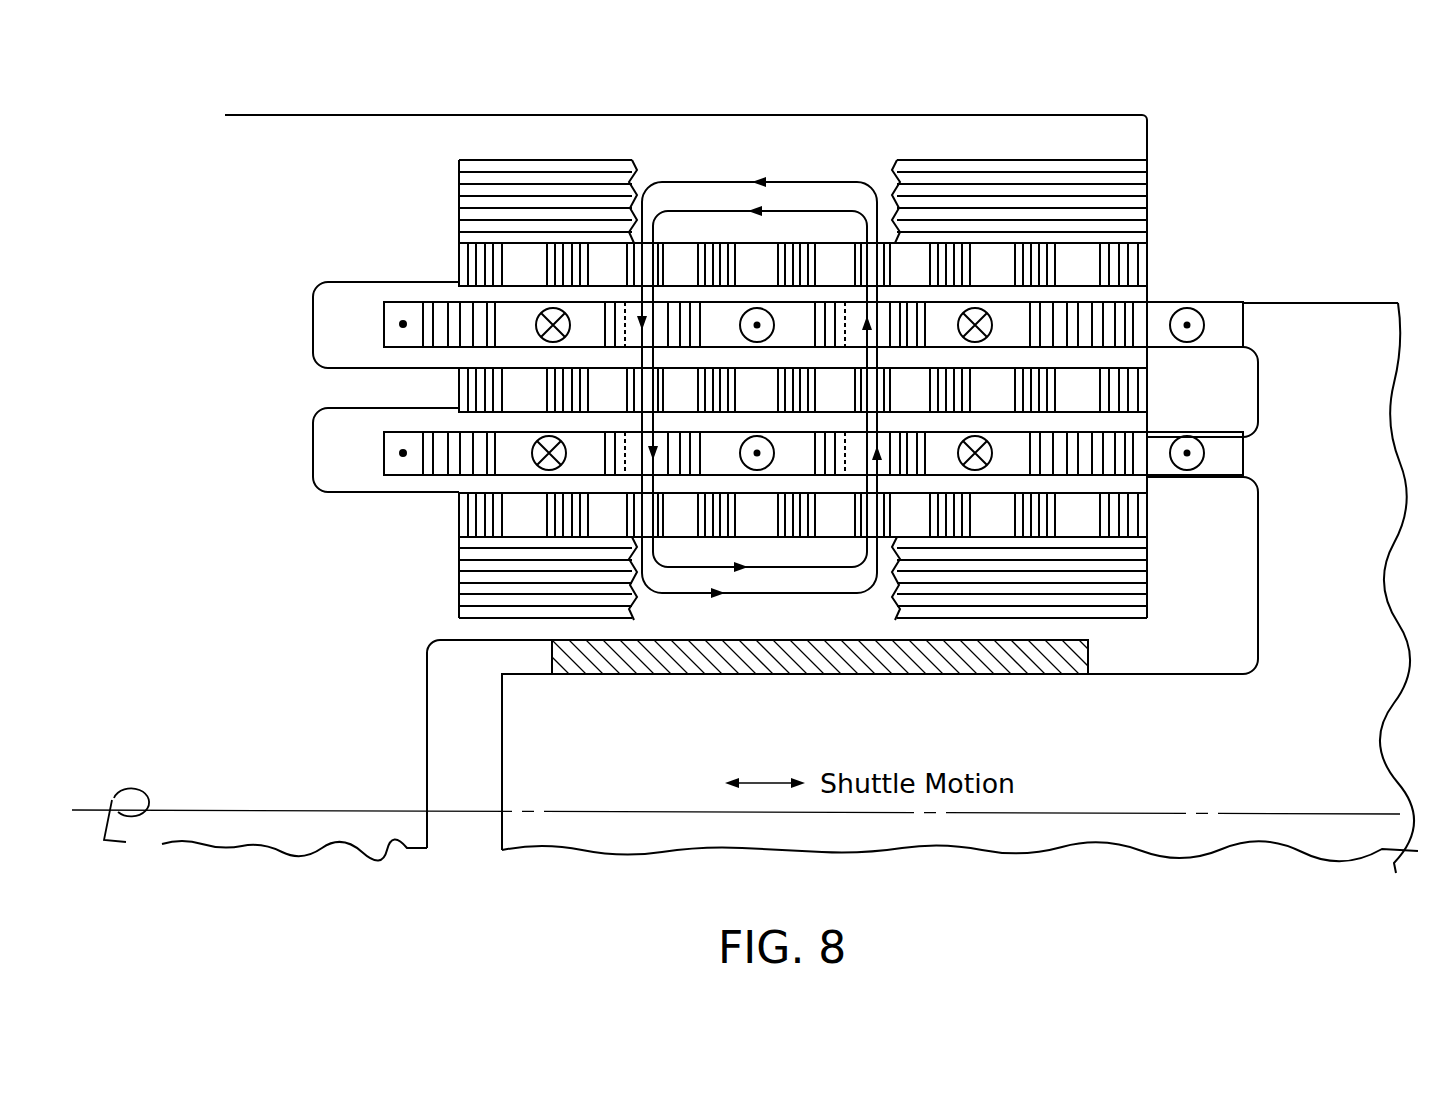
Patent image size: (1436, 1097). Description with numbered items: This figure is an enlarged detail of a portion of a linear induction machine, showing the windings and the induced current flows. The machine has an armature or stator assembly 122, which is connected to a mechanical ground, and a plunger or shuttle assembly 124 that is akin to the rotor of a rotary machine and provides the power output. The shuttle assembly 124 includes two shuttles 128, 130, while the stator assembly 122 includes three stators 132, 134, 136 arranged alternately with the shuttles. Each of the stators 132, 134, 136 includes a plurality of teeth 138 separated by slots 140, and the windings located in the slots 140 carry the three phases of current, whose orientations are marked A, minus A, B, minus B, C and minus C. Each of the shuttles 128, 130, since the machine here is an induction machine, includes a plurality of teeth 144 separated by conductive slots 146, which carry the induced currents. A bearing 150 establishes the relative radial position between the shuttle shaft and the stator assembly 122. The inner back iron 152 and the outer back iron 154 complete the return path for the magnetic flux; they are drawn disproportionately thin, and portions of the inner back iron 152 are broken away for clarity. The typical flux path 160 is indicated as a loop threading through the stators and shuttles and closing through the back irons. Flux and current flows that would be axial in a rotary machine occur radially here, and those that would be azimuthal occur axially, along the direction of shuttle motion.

The stator assembly 122 is at (297, 704).
The shuttle assembly 124 is at (1340, 711).
The shuttle 128 is at (1255, 330).
The shuttle 130 is at (1255, 453).
The stator 132 is at (446, 258).
The stator 134 is at (446, 387).
The stator 136 is at (446, 513).
The teeth 138 is at (790, 243).
The slots 140 is at (602, 243).
The teeth 144 is at (628, 433).
The conductive slots 146 is at (542, 470).
The bearing 150 is at (1035, 676).
The inner back iron portion 152 is at (459, 580).
The outer back iron portion 154 is at (461, 170).
The flux path 160 is at (770, 570).